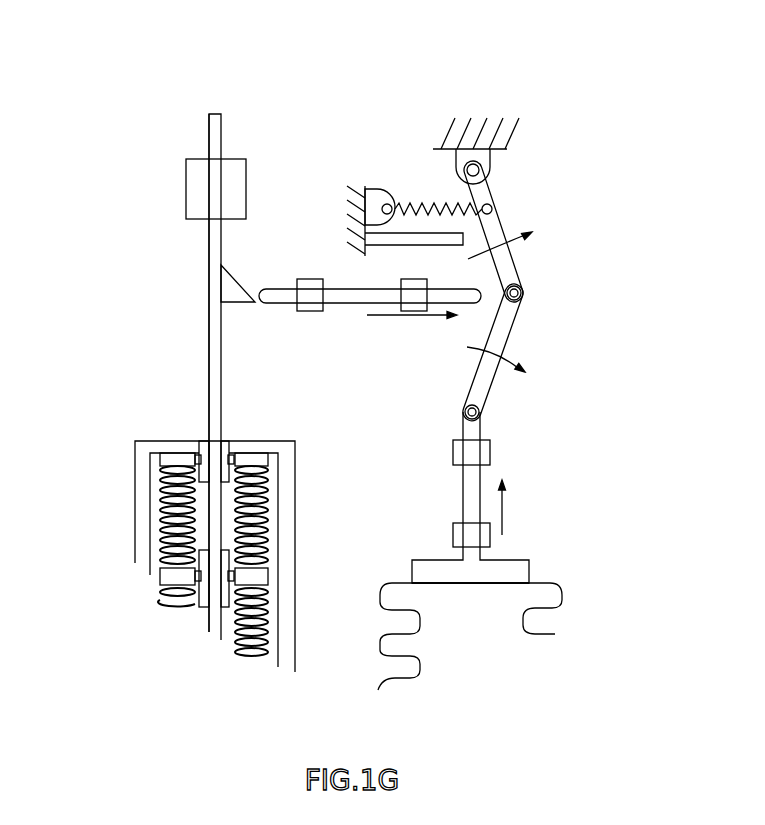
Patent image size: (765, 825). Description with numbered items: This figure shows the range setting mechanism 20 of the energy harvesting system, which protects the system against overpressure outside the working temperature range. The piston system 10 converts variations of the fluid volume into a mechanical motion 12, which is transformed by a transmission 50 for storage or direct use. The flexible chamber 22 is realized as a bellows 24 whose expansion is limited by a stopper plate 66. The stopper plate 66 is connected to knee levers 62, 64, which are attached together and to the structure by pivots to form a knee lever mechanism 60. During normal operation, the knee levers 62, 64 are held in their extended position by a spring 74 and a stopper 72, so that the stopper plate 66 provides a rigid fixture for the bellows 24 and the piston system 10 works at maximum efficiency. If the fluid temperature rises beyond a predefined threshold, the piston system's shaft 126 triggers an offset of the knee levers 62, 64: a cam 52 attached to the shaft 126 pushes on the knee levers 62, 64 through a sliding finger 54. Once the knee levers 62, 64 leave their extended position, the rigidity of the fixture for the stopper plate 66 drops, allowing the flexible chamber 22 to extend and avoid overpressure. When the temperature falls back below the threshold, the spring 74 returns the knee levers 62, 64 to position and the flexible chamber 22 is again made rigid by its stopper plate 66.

The range setting mechanism 20 is at (218, 44).
The piston system 10 is at (162, 424).
The mechanical motion 12 is at (194, 300).
The piston system's shaft 126 is at (212, 243).
The transmission 50 is at (200, 182).
The cam 52 is at (212, 286).
The sliding finger 54 is at (348, 303).
The spring 74 is at (420, 205).
The stopper 72 is at (544, 222).
The knee lever mechanism 60 is at (574, 280).
The knee lever 62 is at (500, 265).
The knee lever 64 is at (503, 325).
The stopper plate 66 is at (503, 567).
The bellows 24 is at (572, 590).
The flexible chamber 22 is at (477, 620).